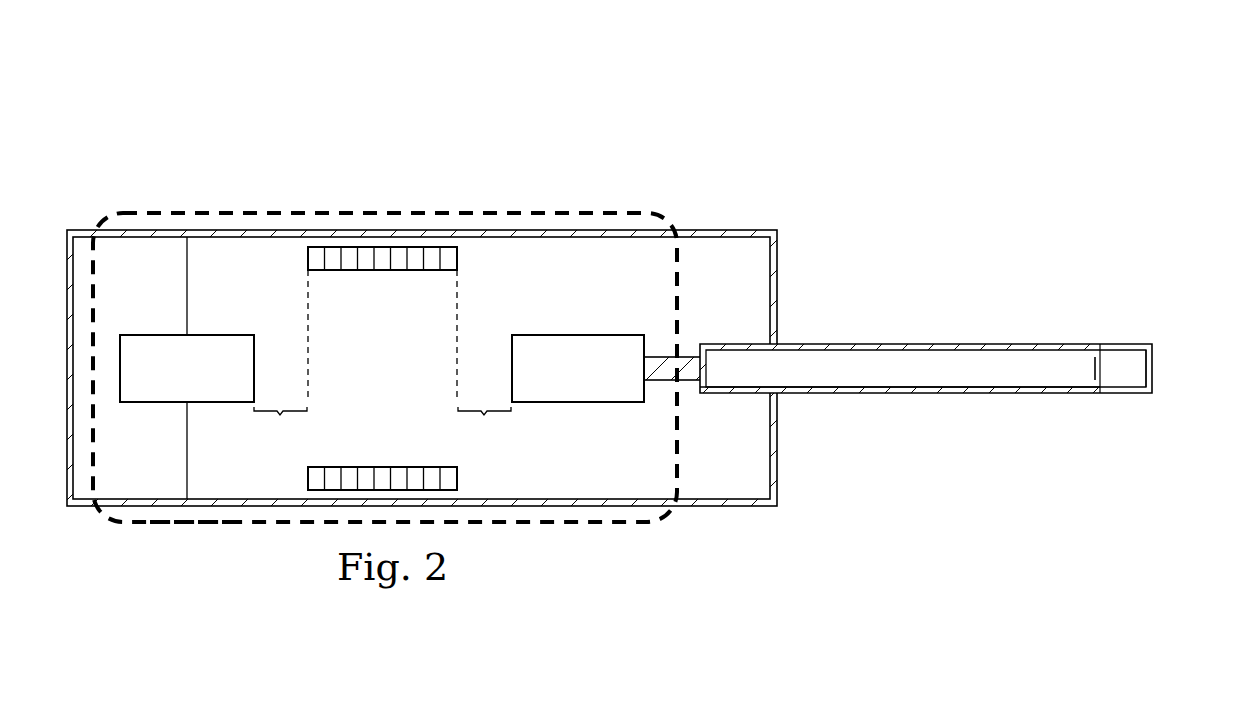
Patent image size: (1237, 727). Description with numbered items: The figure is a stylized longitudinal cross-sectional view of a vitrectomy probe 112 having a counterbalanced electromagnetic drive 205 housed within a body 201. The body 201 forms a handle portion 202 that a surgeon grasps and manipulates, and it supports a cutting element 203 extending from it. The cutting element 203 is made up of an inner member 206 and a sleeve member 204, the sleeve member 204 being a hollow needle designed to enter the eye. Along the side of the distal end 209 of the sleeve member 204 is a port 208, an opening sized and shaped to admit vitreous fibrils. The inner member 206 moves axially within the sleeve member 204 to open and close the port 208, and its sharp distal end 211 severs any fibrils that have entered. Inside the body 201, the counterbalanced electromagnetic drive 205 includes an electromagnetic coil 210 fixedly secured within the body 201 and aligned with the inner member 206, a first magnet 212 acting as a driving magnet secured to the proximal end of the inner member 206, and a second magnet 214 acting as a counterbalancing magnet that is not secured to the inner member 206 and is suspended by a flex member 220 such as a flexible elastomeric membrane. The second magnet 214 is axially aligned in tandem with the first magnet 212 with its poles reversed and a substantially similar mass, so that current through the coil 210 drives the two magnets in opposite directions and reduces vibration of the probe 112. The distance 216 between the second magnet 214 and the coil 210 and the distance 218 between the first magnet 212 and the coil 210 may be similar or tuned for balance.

The vitrectomy probe 112 is at (249, 90).
The body 201 is at (451, 183).
The handle portion 202 is at (83, 230).
The cutting element 203 is at (1092, 331).
The sleeve member 204 is at (987, 393).
The counterbalanced electromagnetic drive 205 is at (180, 527).
The inner member 206 is at (945, 358).
The port 208 is at (1118, 342).
The distal end 209 is at (1160, 378).
The electromagnetic coil 210 is at (380, 271).
The distal end 211 is at (1096, 372).
The first magnet 212 is at (578, 335).
The second magnet 214 is at (160, 335).
The distance 216 is at (281, 361).
The distance 218 is at (484, 361).
The flex member 220 is at (187, 462).